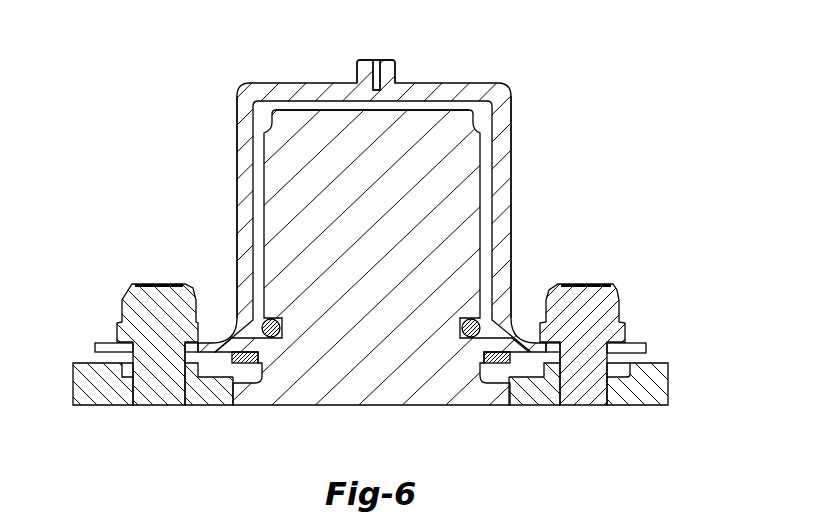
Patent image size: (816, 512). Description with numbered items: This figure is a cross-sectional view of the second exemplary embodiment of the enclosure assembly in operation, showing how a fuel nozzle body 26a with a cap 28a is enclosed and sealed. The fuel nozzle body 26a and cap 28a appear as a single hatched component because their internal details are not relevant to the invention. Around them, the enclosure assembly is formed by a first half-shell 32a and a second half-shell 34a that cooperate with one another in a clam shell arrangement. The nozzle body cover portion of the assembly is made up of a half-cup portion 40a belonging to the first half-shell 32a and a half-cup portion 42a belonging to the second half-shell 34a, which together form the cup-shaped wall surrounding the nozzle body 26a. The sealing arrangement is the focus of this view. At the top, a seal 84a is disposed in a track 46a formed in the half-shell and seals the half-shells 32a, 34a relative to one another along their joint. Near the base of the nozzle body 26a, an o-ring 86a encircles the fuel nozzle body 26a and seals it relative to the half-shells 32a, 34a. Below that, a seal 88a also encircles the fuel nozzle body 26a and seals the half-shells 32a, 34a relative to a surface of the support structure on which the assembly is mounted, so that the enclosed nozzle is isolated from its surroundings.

The fuel nozzle body 26a is at (384, 235).
The cap 28a is at (465, 120).
The first half-shell 32a is at (580, 136).
The second half-shell 34a is at (236, 77).
The half-cup portion 40a is at (496, 207).
The half-cup portion 42a is at (244, 190).
The track 46a is at (380, 82).
The seal 84a is at (377, 86).
The o-ring 86a is at (463, 333).
The seal 88a is at (243, 366).